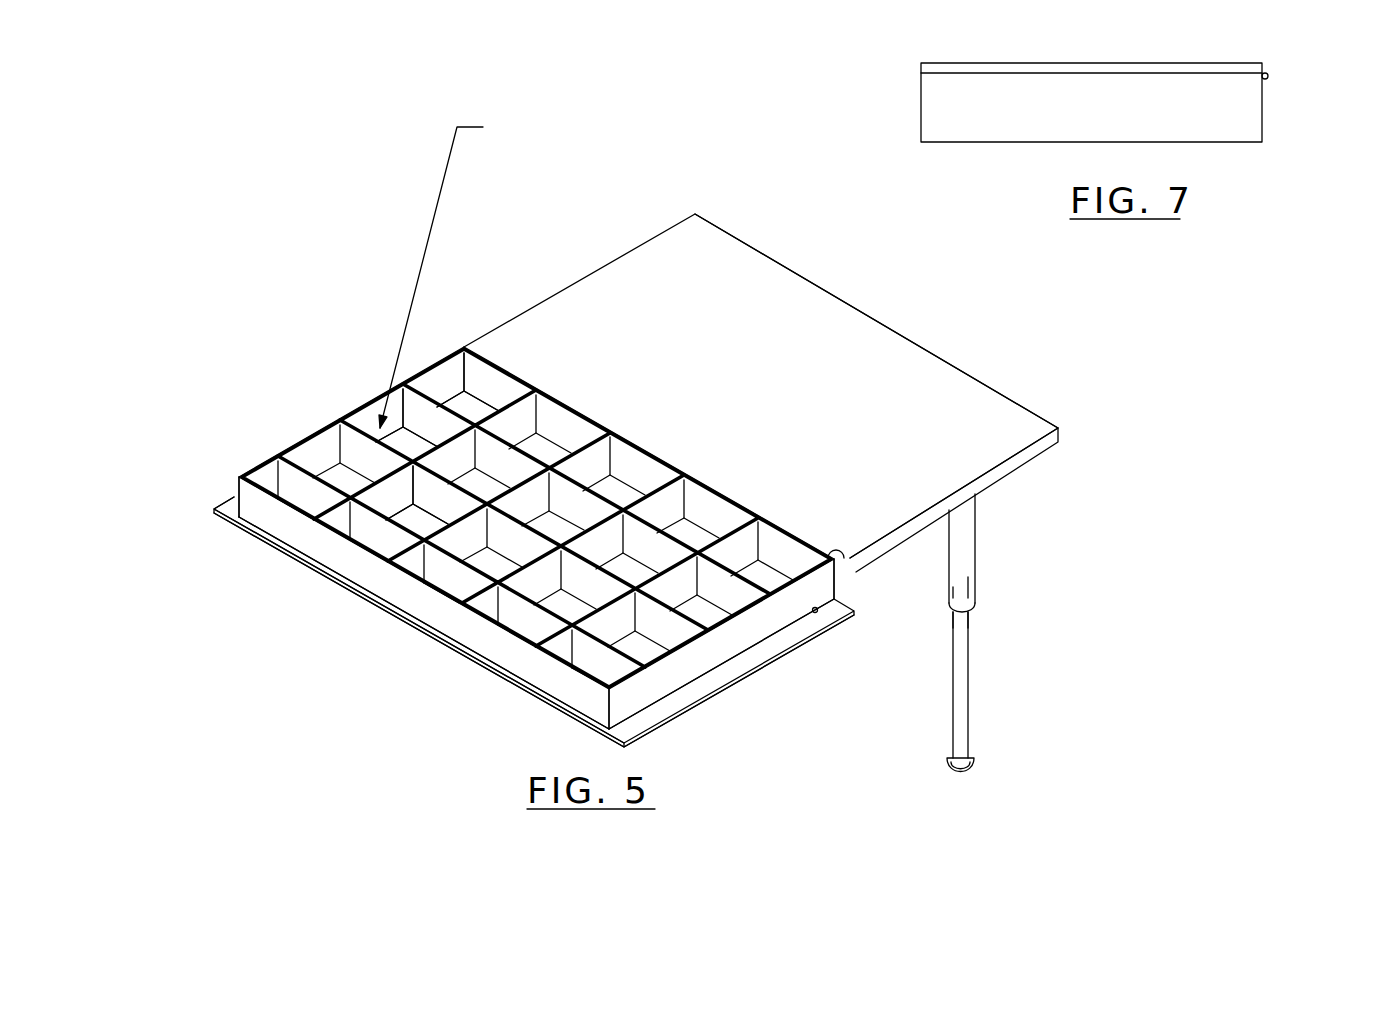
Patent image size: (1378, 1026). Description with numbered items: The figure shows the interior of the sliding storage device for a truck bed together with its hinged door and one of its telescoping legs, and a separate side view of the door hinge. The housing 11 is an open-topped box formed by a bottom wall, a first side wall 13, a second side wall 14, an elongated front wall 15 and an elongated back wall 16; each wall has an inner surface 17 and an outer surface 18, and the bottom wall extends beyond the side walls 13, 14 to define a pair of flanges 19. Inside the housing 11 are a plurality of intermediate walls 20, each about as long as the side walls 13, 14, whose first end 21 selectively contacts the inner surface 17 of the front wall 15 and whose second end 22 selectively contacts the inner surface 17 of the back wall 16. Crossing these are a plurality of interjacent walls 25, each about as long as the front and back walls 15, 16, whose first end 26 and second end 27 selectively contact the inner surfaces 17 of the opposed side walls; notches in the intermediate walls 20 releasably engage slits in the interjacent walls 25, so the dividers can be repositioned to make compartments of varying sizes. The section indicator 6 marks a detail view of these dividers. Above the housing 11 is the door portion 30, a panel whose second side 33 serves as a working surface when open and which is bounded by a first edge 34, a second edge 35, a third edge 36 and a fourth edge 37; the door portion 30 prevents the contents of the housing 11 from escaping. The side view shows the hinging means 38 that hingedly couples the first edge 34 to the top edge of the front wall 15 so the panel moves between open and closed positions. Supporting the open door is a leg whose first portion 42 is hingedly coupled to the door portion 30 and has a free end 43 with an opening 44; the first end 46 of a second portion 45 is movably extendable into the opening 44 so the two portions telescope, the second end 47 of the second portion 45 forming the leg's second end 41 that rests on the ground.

In FIG. 5, the section line indicator 6 is at (446, 267).
In FIG. 7, the housing 11 is at (985, 142).
In FIG. 5, the first side wall 13 is at (727, 653).
In FIG. 5, the second side wall 14 is at (243, 470).
In FIG. 5, the elongated front wall 15 is at (501, 382).
In FIG. 5, the elongated back wall 16 is at (418, 608).
In FIG. 5, the inner surface 17 is at (370, 415).
In FIG. 5, the outer surface 18 is at (767, 623).
In FIG. 5, the flanges 19 is at (655, 737).
In FIG. 5, the intermediate walls 20 is at (375, 486).
In FIG. 5, the first end 21 is at (539, 400).
In FIG. 5, the second end 22 is at (343, 533).
In FIG. 5, the interjacent walls 25 is at (283, 508).
In FIG. 5, the first end 26 is at (290, 458).
In FIG. 5, the second end 27 is at (567, 710).
In FIG. 7, the door portion 30 is at (1128, 63).
In FIG. 5, the second side 33 is at (725, 250).
In FIG. 5, the first edge 34 is at (845, 556).
In FIG. 5, the second edge 35 is at (972, 373).
In FIG. 5, the third edge 36 is at (1050, 445).
In FIG. 5, the fourth edge 37 is at (458, 348).
In FIG. 7, the hinging means 38 is at (1270, 76).
In FIG. 5, the second end 41 is at (952, 778).
In FIG. 5, the first portion 42 is at (978, 527).
In FIG. 5, the free end 43 is at (978, 583).
In FIG. 5, the opening 44 is at (948, 605).
In FIG. 5, the second portion 45 is at (970, 707).
In FIG. 5, the first end 46 is at (980, 615).
In FIG. 5, the second end 47 is at (972, 760).